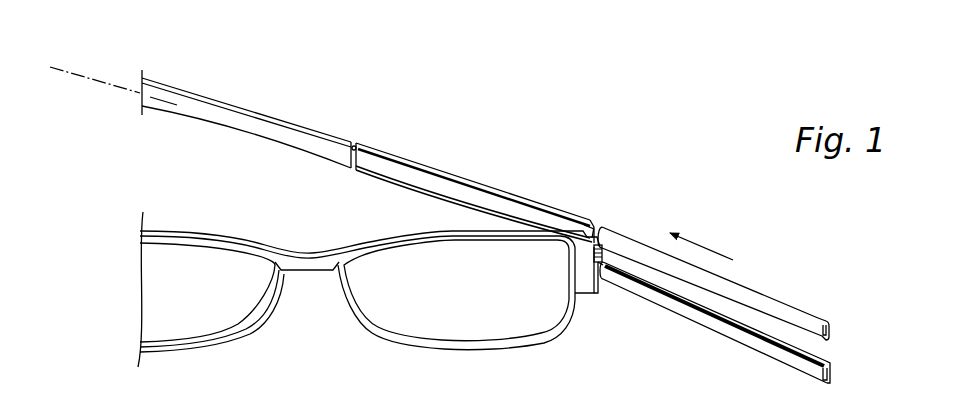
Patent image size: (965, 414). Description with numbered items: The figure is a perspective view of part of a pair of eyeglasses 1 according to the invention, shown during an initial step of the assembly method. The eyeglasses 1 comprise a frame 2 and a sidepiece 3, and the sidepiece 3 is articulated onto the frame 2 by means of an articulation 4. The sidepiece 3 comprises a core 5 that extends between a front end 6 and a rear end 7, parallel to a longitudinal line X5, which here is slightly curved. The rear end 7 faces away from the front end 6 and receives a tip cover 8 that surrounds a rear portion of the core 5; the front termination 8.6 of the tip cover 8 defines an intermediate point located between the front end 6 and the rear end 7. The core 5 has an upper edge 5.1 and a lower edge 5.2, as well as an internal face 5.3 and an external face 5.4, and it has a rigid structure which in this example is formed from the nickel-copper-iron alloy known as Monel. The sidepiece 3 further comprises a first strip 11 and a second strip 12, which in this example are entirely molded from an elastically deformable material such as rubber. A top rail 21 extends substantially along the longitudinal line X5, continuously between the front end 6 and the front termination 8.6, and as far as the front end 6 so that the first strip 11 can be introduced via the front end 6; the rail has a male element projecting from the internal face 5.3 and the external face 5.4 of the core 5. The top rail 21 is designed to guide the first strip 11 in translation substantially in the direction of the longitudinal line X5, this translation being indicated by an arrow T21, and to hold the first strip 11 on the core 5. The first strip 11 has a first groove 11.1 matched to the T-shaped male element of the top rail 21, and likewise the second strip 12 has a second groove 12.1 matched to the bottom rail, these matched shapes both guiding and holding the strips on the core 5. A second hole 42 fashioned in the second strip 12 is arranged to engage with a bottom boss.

The longitudinal line X5 is at (94, 80).
The eyeglasses 1 is at (353, 203).
The frame 2 is at (178, 238).
The sidepiece 3 is at (364, 141).
The articulation 4 is at (597, 272).
The core 5 is at (447, 141).
The upper edge 5.1 is at (436, 150).
The lower edge 5.2 is at (380, 183).
The internal face 5.3 is at (451, 192).
The external face 5.4 is at (503, 181).
The front end 6 is at (593, 214).
The rear end 7 is at (178, 86).
The tip cover 8 is at (214, 118).
The front termination 8.6 is at (359, 148).
The first strip 11 is at (769, 290).
The first groove 11.1 is at (834, 340).
The second strip 12 is at (770, 326).
The second groove 12.1 is at (836, 364).
The top rail 21 is at (600, 226).
The second hole 42 is at (611, 286).
The arrow T21 is at (703, 241).